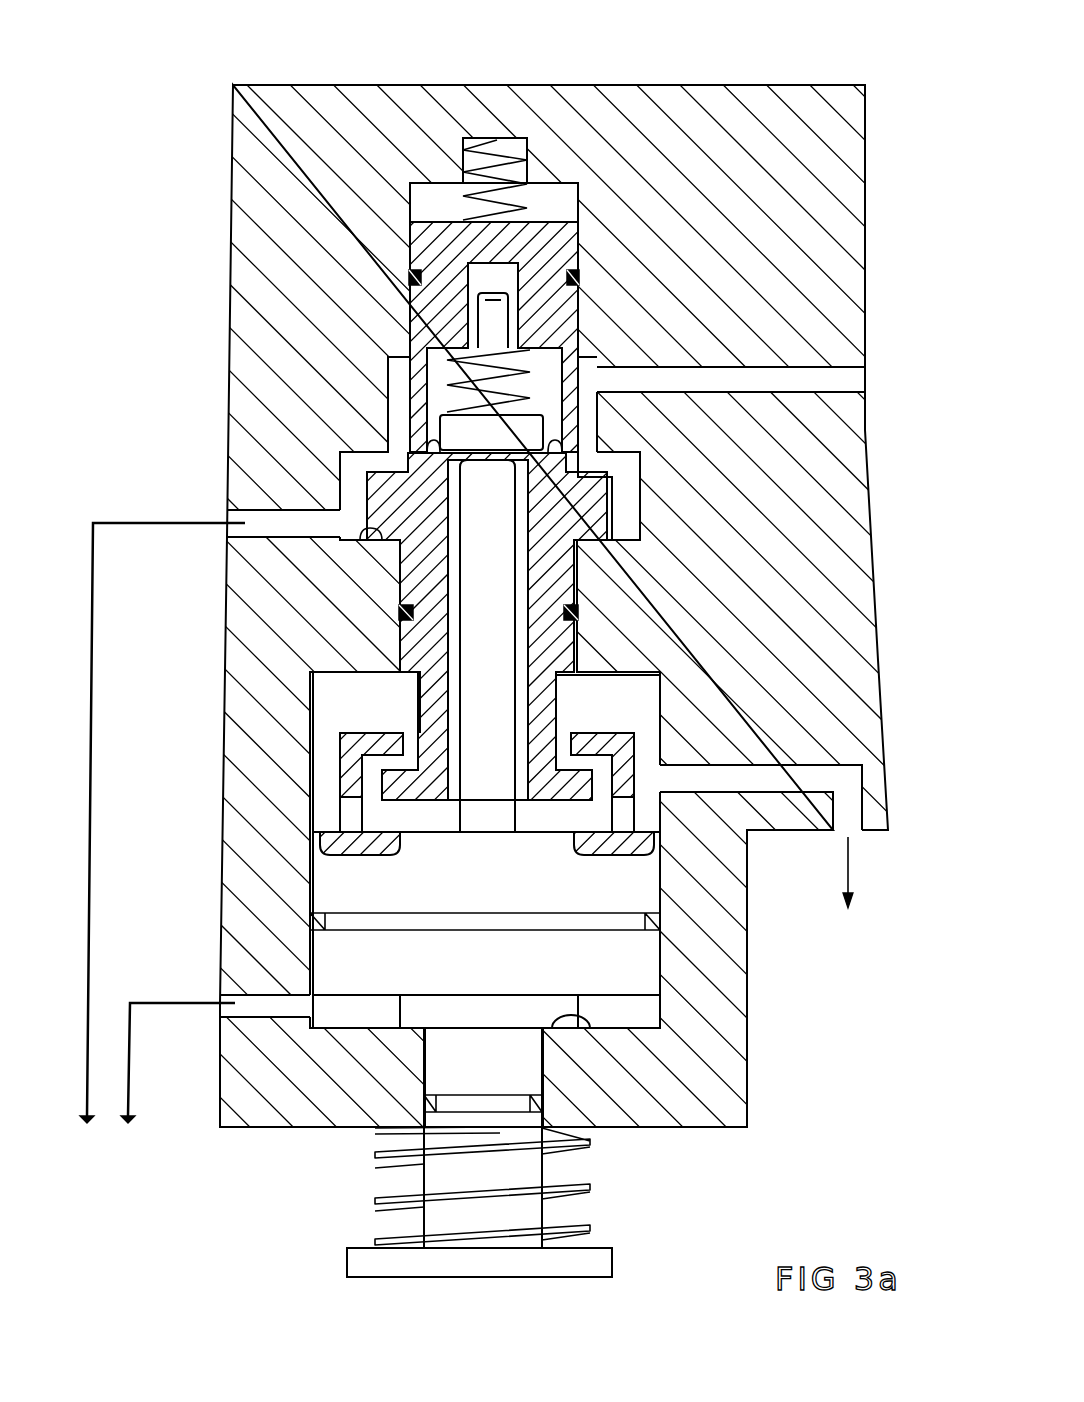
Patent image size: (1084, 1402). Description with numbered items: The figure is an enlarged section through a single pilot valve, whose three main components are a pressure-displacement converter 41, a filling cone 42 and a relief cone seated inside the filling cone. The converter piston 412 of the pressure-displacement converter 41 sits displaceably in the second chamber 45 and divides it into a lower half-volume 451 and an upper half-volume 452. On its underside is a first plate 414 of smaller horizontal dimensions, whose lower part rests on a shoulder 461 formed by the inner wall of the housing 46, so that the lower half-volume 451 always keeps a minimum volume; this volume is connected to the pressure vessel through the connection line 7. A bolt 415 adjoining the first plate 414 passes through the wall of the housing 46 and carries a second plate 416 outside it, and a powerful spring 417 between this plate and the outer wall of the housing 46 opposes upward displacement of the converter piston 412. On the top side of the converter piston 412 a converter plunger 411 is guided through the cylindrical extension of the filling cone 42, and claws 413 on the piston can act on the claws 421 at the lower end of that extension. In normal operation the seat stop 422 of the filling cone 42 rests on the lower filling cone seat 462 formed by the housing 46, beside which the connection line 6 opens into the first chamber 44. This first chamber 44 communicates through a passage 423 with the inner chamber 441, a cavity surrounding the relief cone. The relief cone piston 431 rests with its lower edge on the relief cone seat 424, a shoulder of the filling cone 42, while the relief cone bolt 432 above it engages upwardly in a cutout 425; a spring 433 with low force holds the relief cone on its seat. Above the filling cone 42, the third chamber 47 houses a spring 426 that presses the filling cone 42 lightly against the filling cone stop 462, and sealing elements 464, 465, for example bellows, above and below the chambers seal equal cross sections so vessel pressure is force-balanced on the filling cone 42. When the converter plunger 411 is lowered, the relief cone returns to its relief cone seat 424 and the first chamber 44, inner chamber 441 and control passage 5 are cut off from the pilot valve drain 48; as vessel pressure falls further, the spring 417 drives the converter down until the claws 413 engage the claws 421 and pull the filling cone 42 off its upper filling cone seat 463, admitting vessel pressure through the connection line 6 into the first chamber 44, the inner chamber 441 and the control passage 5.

The pressure-displacement converter 41 is at (640, 967).
The converter plunger 411 is at (475, 652).
The converter piston 412 is at (640, 887).
The claws 413 is at (370, 738).
The first plate 414 is at (415, 1002).
The bolt 415 is at (433, 1175).
The second plate 416 is at (600, 1268).
The spring 417 is at (545, 1175).
The filling cone 42 is at (405, 318).
The claws 421 is at (385, 785).
The seat stop 422 is at (600, 545).
The passage 423 is at (430, 432).
The relief cone seat 424 is at (585, 470).
The cutout 425 is at (543, 218).
The spring 426 is at (494, 150).
The relief cone piston 431 is at (446, 430).
The relief cone bolt 432 is at (480, 310).
The spring 433 is at (517, 363).
The first chamber 44 is at (588, 413).
The inner chamber 441 is at (543, 383).
The second chamber 45 is at (627, 1018).
The lower half-volume 451 is at (620, 1032).
The upper half-volume 452 is at (650, 704).
The housing 46 is at (723, 1105).
The shoulder 461 is at (578, 1028).
The filling cone seat 462 is at (368, 538).
The upper filling cone seat 463 is at (612, 478).
The sealing element 464 is at (417, 283).
The sealing element 465 is at (405, 612).
The third chamber 47 is at (441, 197).
The pilot valve drain 48 is at (848, 803).
The control passage 5 is at (808, 378).
The connection line 6 is at (168, 522).
The connection line 7 is at (152, 1003).